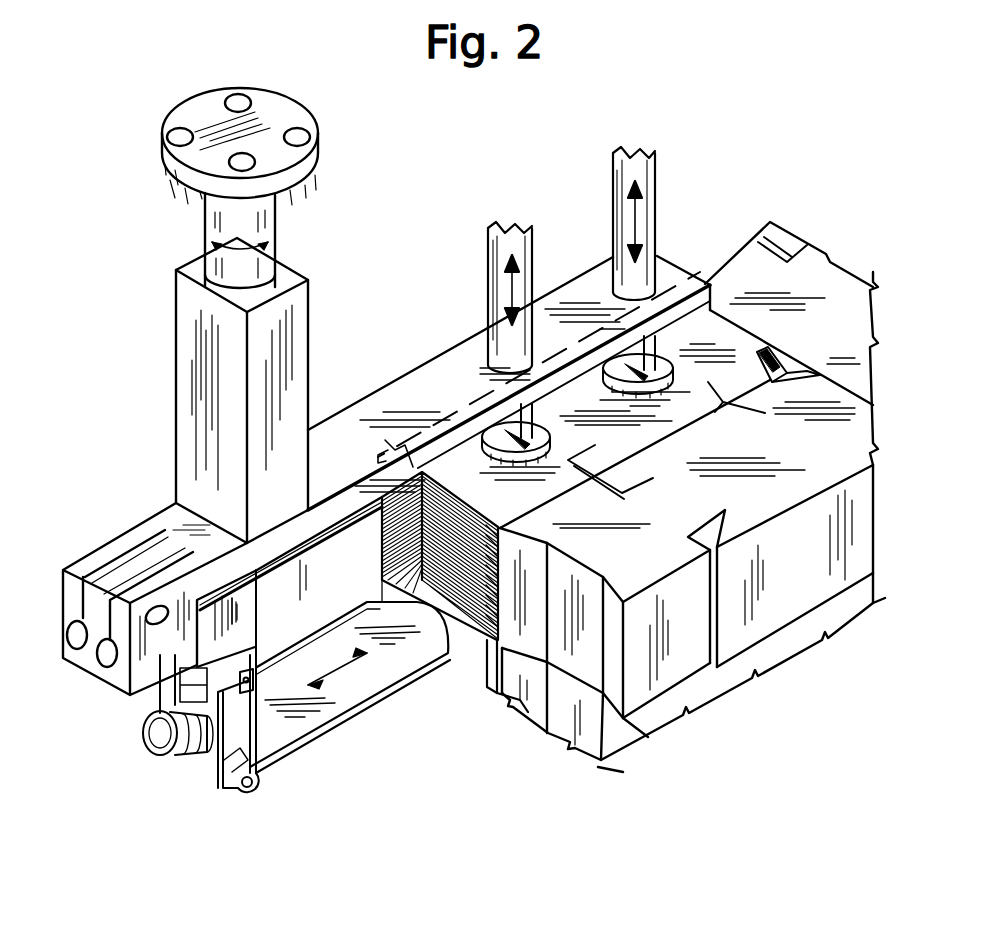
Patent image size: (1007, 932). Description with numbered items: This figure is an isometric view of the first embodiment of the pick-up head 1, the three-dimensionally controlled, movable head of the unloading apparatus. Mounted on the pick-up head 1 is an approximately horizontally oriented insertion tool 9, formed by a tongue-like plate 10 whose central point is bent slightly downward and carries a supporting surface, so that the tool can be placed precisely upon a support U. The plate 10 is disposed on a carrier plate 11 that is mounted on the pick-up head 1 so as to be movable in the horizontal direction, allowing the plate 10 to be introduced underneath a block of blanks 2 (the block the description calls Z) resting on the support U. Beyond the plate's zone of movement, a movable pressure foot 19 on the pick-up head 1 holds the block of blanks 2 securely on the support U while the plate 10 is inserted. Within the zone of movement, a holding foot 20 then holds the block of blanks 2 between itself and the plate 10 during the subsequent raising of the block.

The pick-up head 1 is at (196, 393).
The block of blanks 2 is at (745, 386).
The insertion tool 9 is at (277, 719).
The tongue-like plate 10 is at (343, 680).
The carrier plate 11 is at (240, 735).
The pressure foot 19 is at (655, 177).
The holding foot 20 is at (488, 248).
The support U is at (663, 718).